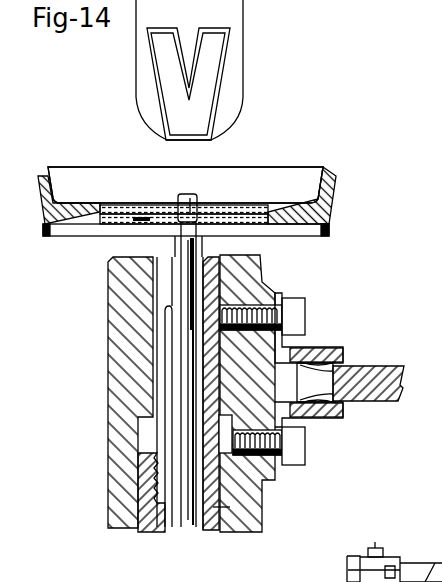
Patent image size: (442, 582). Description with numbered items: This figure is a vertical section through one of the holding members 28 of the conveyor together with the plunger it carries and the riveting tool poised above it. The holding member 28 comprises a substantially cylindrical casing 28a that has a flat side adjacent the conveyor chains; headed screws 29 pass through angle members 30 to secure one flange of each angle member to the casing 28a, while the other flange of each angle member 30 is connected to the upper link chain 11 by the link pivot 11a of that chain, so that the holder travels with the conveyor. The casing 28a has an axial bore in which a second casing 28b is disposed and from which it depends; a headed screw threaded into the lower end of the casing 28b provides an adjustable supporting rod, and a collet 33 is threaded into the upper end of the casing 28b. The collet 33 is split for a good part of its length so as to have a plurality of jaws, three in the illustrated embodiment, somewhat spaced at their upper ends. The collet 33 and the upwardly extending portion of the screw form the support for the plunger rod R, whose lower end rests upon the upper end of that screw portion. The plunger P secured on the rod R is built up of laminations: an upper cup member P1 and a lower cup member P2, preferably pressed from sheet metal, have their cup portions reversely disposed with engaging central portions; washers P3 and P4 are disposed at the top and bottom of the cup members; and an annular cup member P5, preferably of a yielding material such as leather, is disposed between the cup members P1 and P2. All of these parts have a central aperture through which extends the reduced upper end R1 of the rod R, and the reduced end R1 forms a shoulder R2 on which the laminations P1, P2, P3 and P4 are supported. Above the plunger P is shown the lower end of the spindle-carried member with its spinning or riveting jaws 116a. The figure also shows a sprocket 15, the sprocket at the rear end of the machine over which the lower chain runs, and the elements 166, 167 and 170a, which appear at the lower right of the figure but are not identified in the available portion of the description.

The spinning or riveting jaws 116a is at (177, 108).
The plunger P is at (68, 160).
The upper cup member P1 is at (315, 168).
The lower cup member P2 is at (318, 236).
The washer P3 is at (214, 205).
The washer P4 is at (237, 216).
The annular cup member P5 is at (333, 207).
The plunger rod R is at (187, 532).
The reduced upper end R1 is at (180, 194).
The shoulder R2 is at (178, 244).
The collet 33 is at (163, 283).
The holding member 28 is at (110, 458).
The casing 28a is at (120, 398).
The second casing 28b is at (154, 532).
The headed screws 29 is at (300, 310).
The link pivot 11a is at (318, 347).
The angle members 30 is at (338, 355).
The link chain 11 is at (342, 359).
The cap 166 is at (375, 548).
The block 167 is at (347, 564).
The plate 170a is at (347, 578).
The sprocket 15 is at (433, 563).